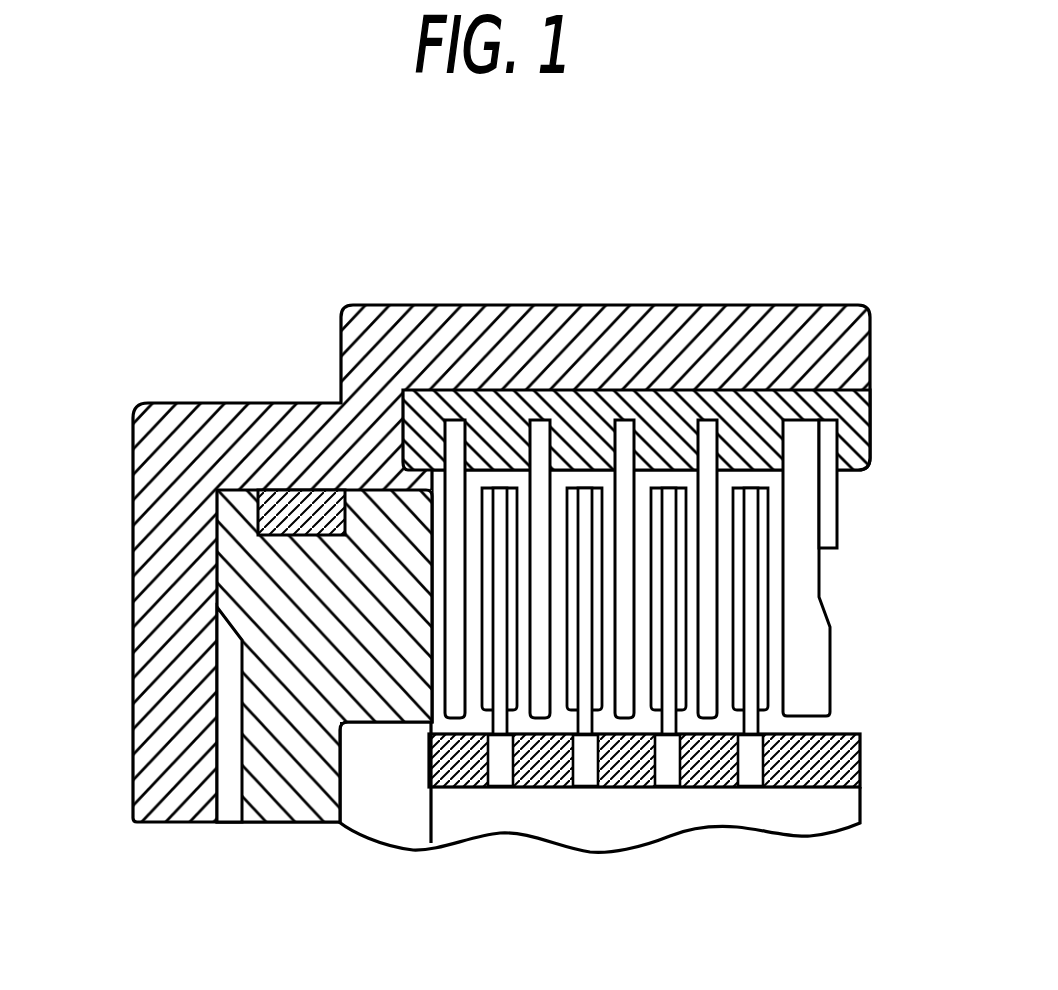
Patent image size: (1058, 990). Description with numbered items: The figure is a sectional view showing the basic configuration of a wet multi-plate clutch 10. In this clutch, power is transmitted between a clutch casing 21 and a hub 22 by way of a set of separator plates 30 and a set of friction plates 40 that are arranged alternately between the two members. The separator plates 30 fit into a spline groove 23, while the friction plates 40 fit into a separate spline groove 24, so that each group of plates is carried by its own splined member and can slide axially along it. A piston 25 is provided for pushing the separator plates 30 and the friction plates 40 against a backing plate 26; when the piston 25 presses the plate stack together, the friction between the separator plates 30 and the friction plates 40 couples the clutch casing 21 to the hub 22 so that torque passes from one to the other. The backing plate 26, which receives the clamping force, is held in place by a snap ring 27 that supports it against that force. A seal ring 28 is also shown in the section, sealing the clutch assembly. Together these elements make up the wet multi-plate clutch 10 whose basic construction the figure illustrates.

The wet multi-plate clutch 10 is at (838, 258).
The clutch casing 21 is at (152, 572).
The hub 22 is at (817, 820).
The spline groove 23 is at (862, 408).
The spline groove 24 is at (860, 758).
The piston 25 is at (302, 725).
The backing plate 26 is at (805, 590).
The snap ring 27 is at (827, 498).
The seal ring 28 is at (302, 496).
The separator plates 30 is at (455, 420).
The friction plates 40 is at (499, 492).